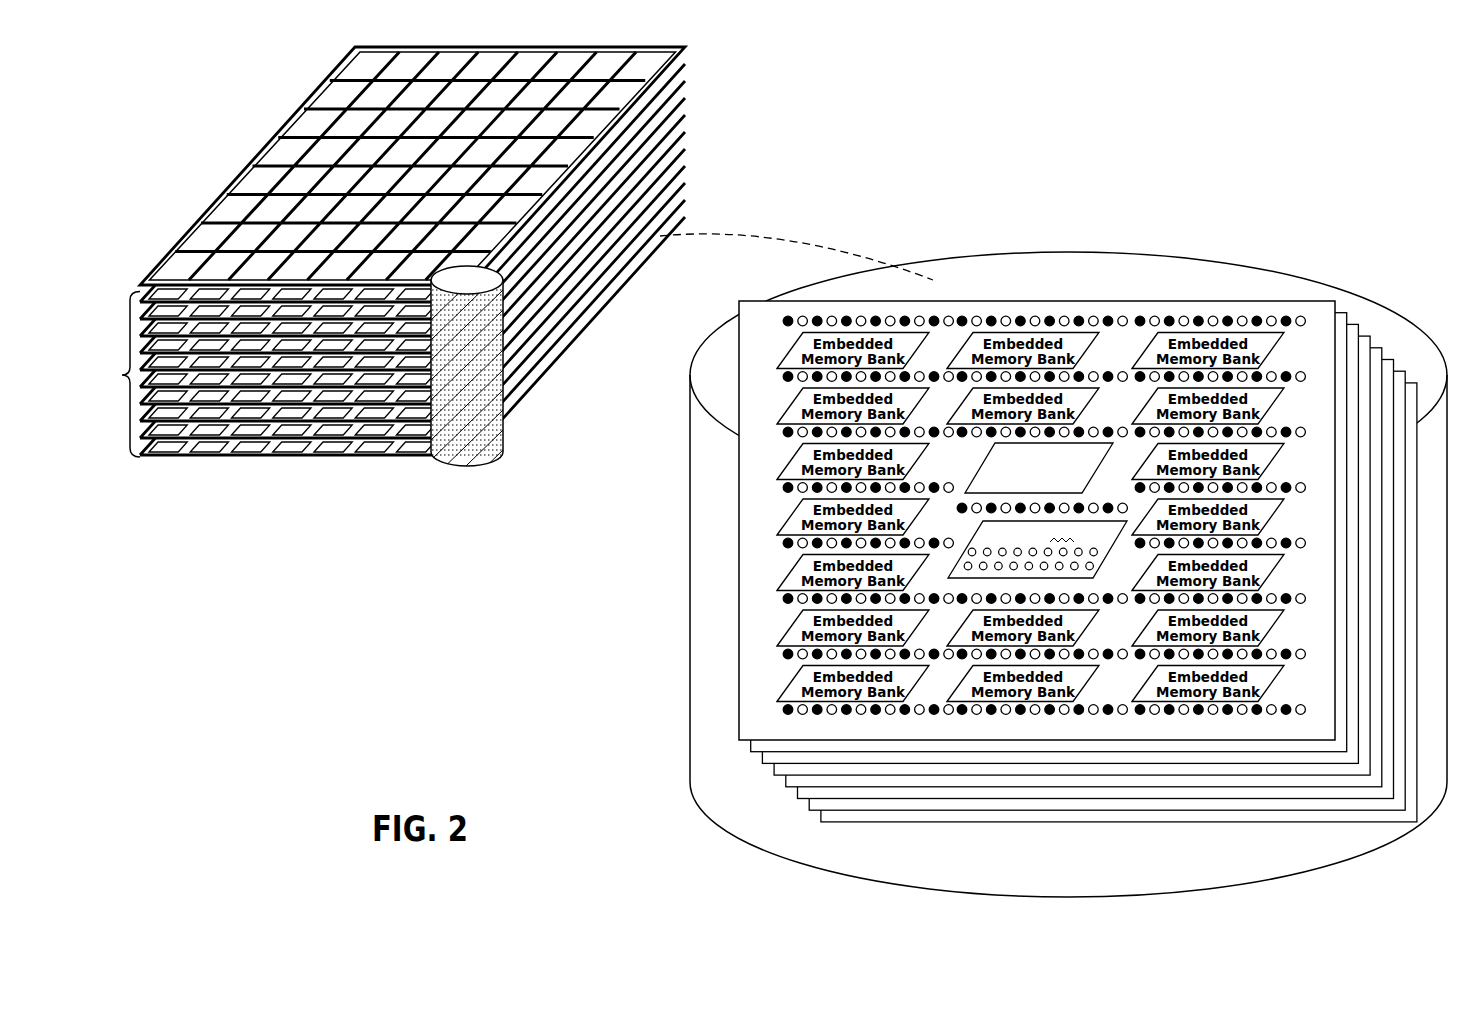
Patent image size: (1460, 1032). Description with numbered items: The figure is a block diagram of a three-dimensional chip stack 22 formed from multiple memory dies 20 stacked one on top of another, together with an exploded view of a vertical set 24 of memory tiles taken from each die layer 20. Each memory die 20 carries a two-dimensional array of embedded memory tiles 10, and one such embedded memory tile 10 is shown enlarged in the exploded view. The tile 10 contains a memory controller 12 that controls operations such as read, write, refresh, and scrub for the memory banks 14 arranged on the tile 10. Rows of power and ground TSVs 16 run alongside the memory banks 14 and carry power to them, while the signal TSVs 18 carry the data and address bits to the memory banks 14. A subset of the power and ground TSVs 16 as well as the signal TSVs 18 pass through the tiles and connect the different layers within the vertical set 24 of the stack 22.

The embedded memory tile 10 is at (1035, 300).
The memory controller 12 is at (1116, 458).
The memory bank 14 is at (786, 337).
The power and ground TSVs 16 is at (1286, 320).
The signal TSVs 18 is at (957, 531).
The memory die 20 is at (384, 252).
The 3D chip stack 22 is at (298, 111).
The vertical set 24 is at (489, 459).